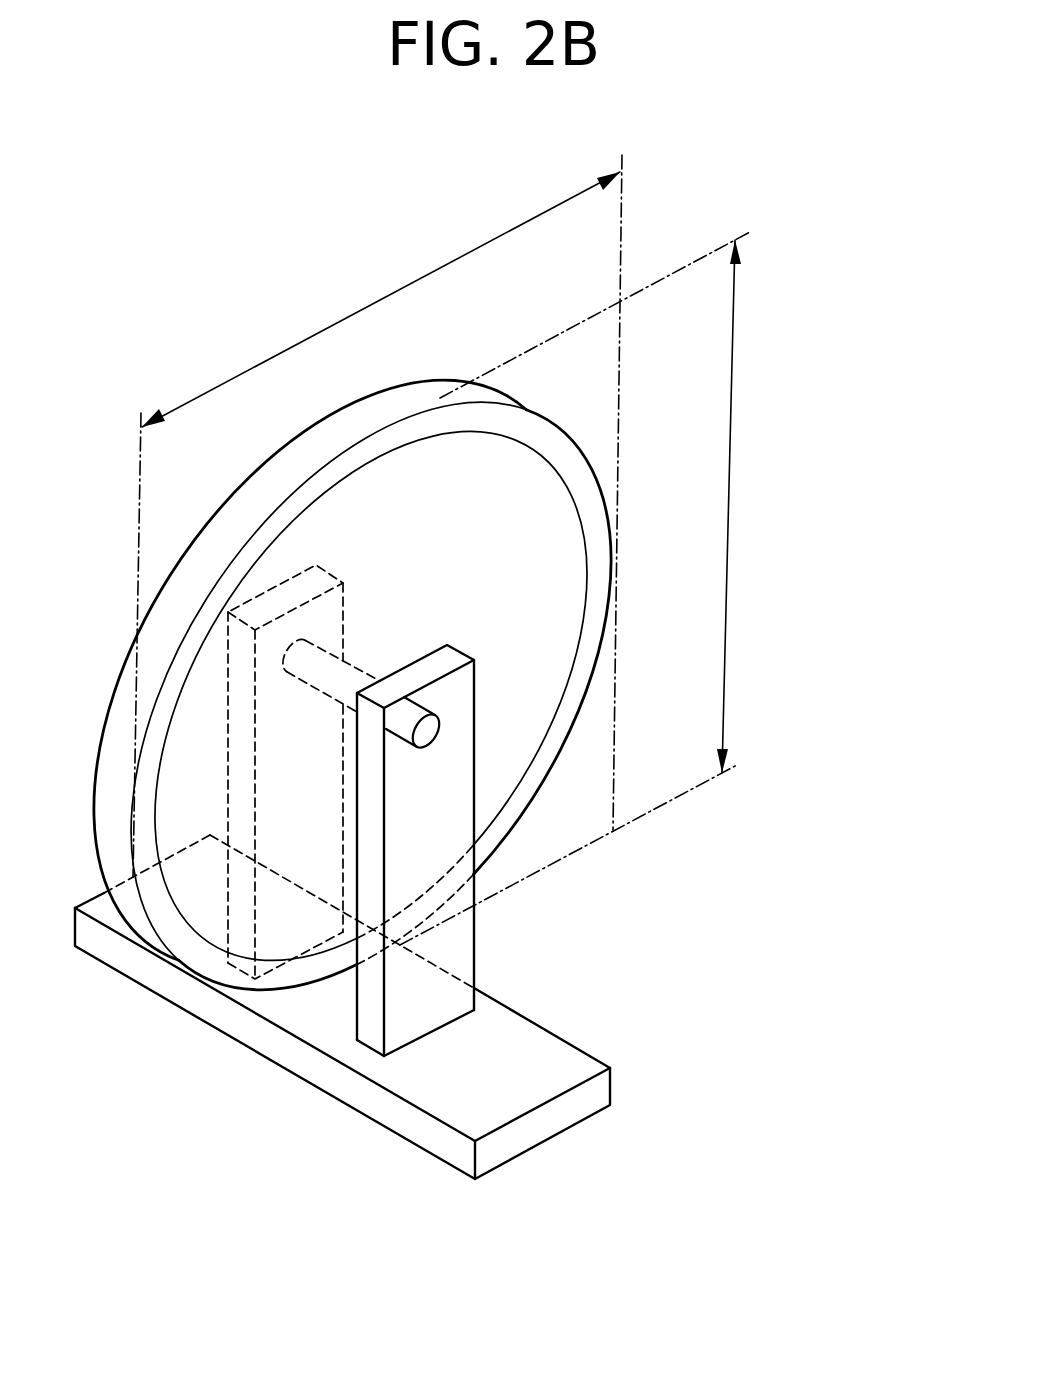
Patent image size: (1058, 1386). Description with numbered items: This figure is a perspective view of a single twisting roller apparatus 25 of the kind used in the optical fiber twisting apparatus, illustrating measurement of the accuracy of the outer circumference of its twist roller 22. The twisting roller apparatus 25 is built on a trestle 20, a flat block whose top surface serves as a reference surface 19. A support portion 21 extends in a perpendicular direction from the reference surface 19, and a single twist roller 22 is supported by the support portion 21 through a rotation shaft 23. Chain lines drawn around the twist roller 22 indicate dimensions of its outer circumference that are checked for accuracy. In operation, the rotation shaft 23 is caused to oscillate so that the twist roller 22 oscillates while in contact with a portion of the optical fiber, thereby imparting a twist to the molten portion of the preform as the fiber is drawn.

The reference surface 19 is at (409, 928).
The trestle 20 is at (538, 1128).
The support portion 21 is at (405, 985).
The twist roller 22 is at (530, 632).
The rotation shaft 23 is at (440, 738).
The twisting roller apparatus 25 is at (612, 852).